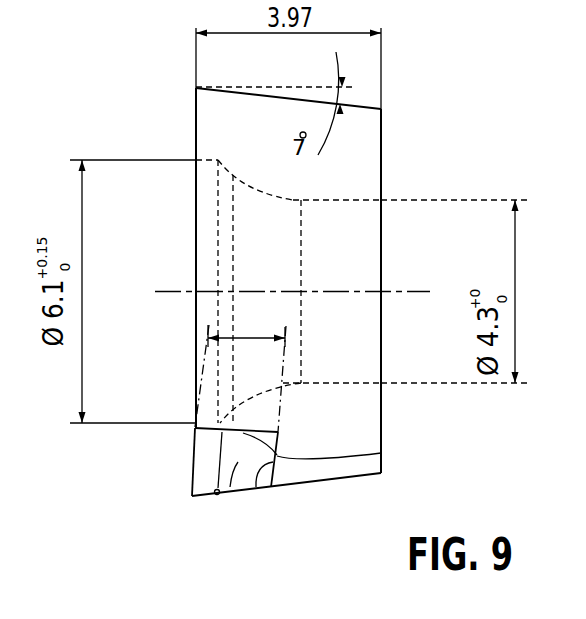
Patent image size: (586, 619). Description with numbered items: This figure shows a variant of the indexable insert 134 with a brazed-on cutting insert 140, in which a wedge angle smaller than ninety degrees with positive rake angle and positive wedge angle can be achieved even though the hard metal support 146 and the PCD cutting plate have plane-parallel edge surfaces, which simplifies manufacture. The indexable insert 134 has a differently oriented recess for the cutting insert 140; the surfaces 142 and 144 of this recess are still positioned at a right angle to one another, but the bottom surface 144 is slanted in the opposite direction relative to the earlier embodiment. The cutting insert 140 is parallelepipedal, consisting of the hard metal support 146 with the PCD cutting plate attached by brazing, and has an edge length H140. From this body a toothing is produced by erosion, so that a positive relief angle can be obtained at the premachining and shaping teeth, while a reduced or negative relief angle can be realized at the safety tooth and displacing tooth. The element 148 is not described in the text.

The indexable insert 134 is at (345, 167).
The cutting insert 140 is at (232, 511).
The surface 142 is at (381, 454).
The bottom surface 144 is at (257, 492).
The hard metal support 146 is at (212, 496).
The rake face of cutting insert 148 is at (208, 462).
The edge length H140 is at (250, 338).